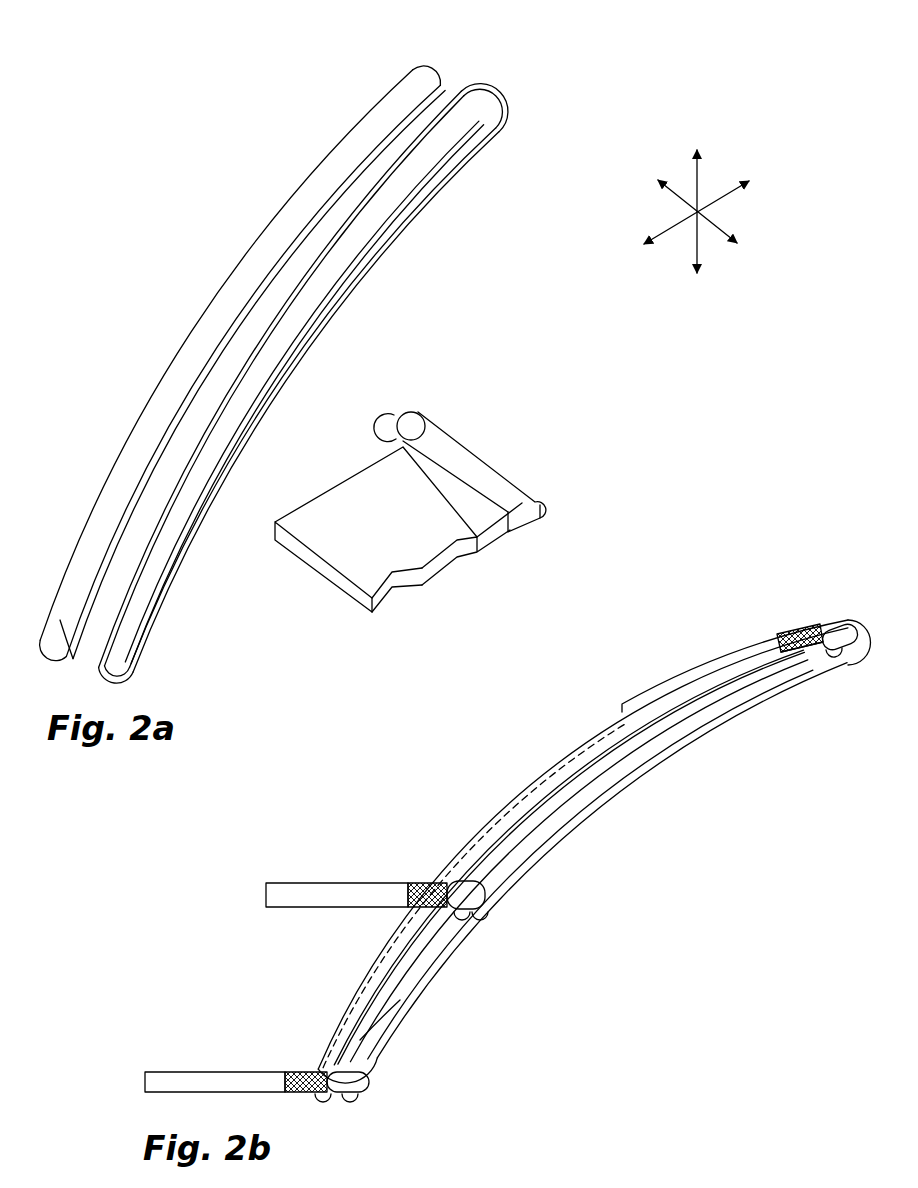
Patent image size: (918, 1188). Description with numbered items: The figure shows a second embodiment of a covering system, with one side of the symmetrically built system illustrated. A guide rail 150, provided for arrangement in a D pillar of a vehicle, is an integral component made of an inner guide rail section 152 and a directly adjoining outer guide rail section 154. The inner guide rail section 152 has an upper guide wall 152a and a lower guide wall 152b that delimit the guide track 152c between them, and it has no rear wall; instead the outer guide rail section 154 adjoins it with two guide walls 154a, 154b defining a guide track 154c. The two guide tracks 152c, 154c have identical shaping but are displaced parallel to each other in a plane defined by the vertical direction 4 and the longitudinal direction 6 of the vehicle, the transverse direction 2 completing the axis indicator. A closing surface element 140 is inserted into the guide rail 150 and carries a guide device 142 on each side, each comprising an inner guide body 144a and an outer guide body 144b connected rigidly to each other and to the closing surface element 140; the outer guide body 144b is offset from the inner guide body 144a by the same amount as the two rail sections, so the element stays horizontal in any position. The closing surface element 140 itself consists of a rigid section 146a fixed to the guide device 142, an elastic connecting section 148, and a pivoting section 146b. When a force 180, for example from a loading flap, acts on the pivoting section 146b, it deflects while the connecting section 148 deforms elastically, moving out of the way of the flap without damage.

In FIG. 2a, the transverse direction 2 is at (708, 217).
In FIG. 2a, the vertical direction 4 is at (702, 170).
In FIG. 2a, the longitudinal direction 6 is at (728, 190).
In FIG. 2a, the closing surface element 140 is at (484, 584).
In FIG. 2b, the closing surface element 140 is at (420, 852).
In FIG. 2a, the guide device 142 is at (437, 406).
In FIG. 2a, the inner guide body 144a is at (417, 420).
In FIG. 2b, the inner guide body 144a is at (847, 628).
In FIG. 2a, the outer guide body 144b is at (378, 425).
In FIG. 2b, the outer guide body 144b is at (820, 648).
In FIG. 2a, the rigid section 146a is at (525, 502).
In FIG. 2b, the rigid section 146a is at (818, 617).
In FIG. 2a, the pivoting section 146b is at (374, 582).
In FIG. 2b, the pivoting section 146b is at (760, 650).
In FIG. 2a, the elastic connecting section 148 is at (500, 518).
In FIG. 2b, the elastic connecting section 148 is at (800, 628).
In FIG. 2a, the guide rail 150 is at (158, 264).
In FIG. 2b, the guide rail 150 is at (458, 788).
In FIG. 2a, the inner guide rail section 152 is at (498, 96).
In FIG. 2b, the inner guide rail section 152 is at (614, 793).
In FIG. 2a, the upper guide wall 152a is at (400, 192).
In FIG. 2b, the upper guide wall 152a is at (426, 931).
In FIG. 2a, the lower guide wall 152b is at (382, 246).
In FIG. 2b, the lower guide wall 152b is at (430, 987).
In FIG. 2a, the guide track 152c is at (315, 300).
In FIG. 2b, the guide track 152c is at (419, 965).
In FIG. 2a, the outer guide rail section 154 is at (444, 64).
In FIG. 2b, the outer guide rail section 154 is at (618, 762).
In FIG. 2a, the guide wall 154a is at (70, 607).
In FIG. 2b, the guide wall 154a is at (365, 982).
In FIG. 2a, the guide wall 154b is at (107, 667).
In FIG. 2b, the guide wall 154b is at (367, 1043).
In FIG. 2a, the guide track 154c is at (80, 650).
In FIG. 2b, the guide track 154c is at (363, 1000).
In FIG. 2b, the force 180 is at (637, 690).